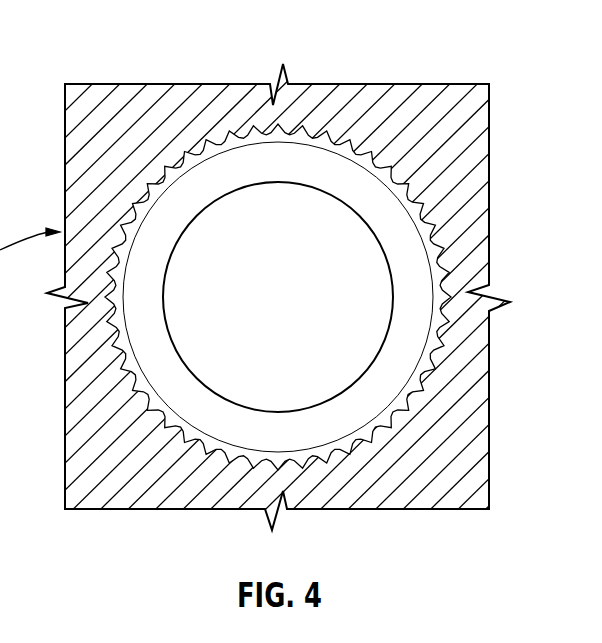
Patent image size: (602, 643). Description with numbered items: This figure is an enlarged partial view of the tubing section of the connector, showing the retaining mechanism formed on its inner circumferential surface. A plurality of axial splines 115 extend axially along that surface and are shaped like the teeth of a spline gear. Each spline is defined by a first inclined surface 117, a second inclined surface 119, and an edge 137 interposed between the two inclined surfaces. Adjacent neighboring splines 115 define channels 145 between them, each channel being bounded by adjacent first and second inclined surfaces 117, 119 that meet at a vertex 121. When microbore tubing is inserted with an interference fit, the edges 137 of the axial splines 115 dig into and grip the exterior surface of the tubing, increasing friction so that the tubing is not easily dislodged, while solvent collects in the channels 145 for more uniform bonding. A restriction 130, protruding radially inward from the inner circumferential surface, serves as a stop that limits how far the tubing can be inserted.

The axial splines 115 is at (160, 170).
The first inclined surface 117 is at (255, 132).
The second inclined surface 119 is at (275, 127).
The vertex 121 is at (157, 170).
The restriction 130 is at (378, 198).
The edge 137 is at (367, 142).
The channels 145 is at (168, 165).